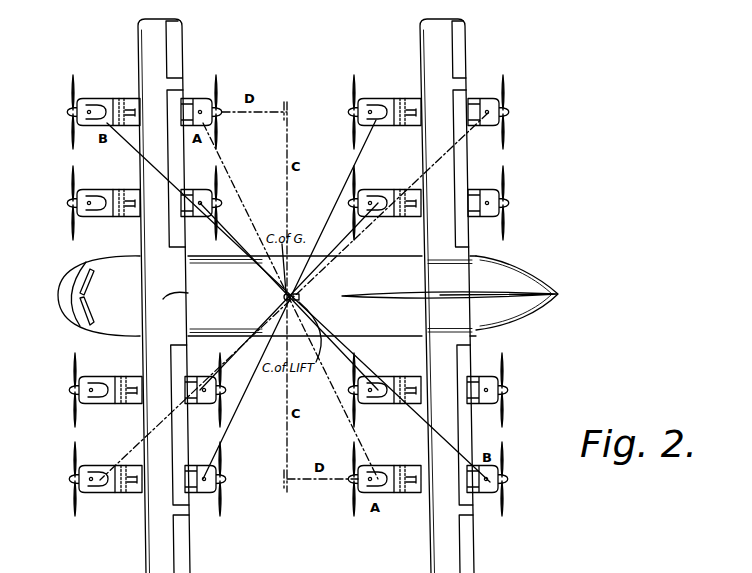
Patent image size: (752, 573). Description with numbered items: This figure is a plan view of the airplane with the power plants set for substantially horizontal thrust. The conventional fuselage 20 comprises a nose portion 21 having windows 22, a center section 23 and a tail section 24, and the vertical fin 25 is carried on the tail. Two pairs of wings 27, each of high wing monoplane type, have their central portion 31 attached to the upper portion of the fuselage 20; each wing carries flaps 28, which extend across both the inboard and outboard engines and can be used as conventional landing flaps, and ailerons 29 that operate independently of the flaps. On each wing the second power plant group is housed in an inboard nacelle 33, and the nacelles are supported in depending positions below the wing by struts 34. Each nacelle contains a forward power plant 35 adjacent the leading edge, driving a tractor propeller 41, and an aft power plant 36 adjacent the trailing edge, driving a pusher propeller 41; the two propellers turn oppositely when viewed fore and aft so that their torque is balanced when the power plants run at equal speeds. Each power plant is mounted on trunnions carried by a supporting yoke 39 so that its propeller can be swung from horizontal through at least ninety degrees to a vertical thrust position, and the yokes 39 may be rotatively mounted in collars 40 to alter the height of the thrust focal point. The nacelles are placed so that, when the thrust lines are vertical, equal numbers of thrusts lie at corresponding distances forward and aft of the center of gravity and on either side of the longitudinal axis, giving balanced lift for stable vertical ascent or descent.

The fuselage 20 is at (371, 333).
The nose portion 21 is at (60, 297).
The windows 22 is at (81, 290).
The center section 23 is at (340, 292).
The tail section 24 is at (497, 273).
The vertical fin 25 is at (404, 293).
The wings 27 is at (147, 60).
The flaps 28 is at (183, 170).
The ailerons 29 is at (176, 45).
The central portion 31 is at (166, 297).
The inboard nacelle 33 is at (126, 217).
The struts 34 is at (131, 106).
The forward power plant 35 is at (94, 101).
The aft power plant 36 is at (198, 101).
The supporting yoke 39 is at (99, 190).
The collars 40 is at (122, 190).
The propeller 41 is at (222, 127).